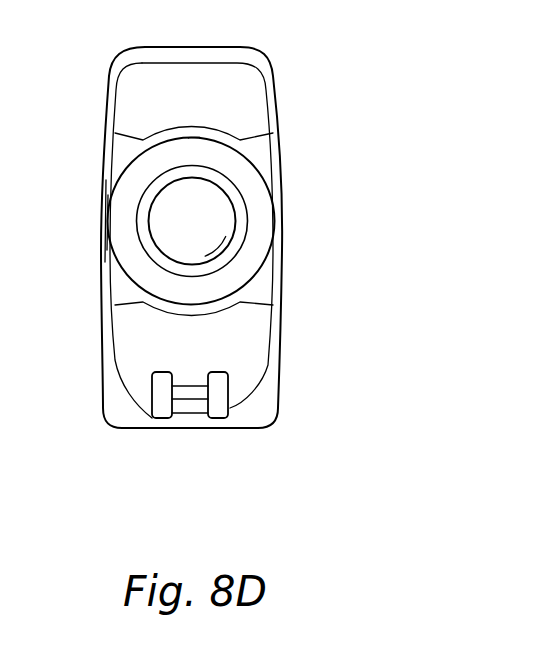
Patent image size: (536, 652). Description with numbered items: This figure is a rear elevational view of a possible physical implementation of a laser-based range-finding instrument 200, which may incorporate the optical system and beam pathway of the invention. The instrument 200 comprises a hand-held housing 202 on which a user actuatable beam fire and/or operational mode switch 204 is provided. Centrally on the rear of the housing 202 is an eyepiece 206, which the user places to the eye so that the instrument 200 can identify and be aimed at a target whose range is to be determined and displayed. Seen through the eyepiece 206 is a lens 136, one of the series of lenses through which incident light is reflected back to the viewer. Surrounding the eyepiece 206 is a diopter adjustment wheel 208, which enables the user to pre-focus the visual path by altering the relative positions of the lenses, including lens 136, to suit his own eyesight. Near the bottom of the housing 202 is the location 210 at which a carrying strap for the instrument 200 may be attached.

The laser-based range-finding instrument 200 is at (143, 512).
The hand-held housing 202 is at (213, 24).
The beam fire and/or operational mode switch 204 is at (103, 222).
The eyepiece 206 is at (255, 273).
The diopter adjustment wheel 208 is at (208, 137).
The carrying strap attachment location 210 is at (185, 393).
The lens 136 is at (215, 215).